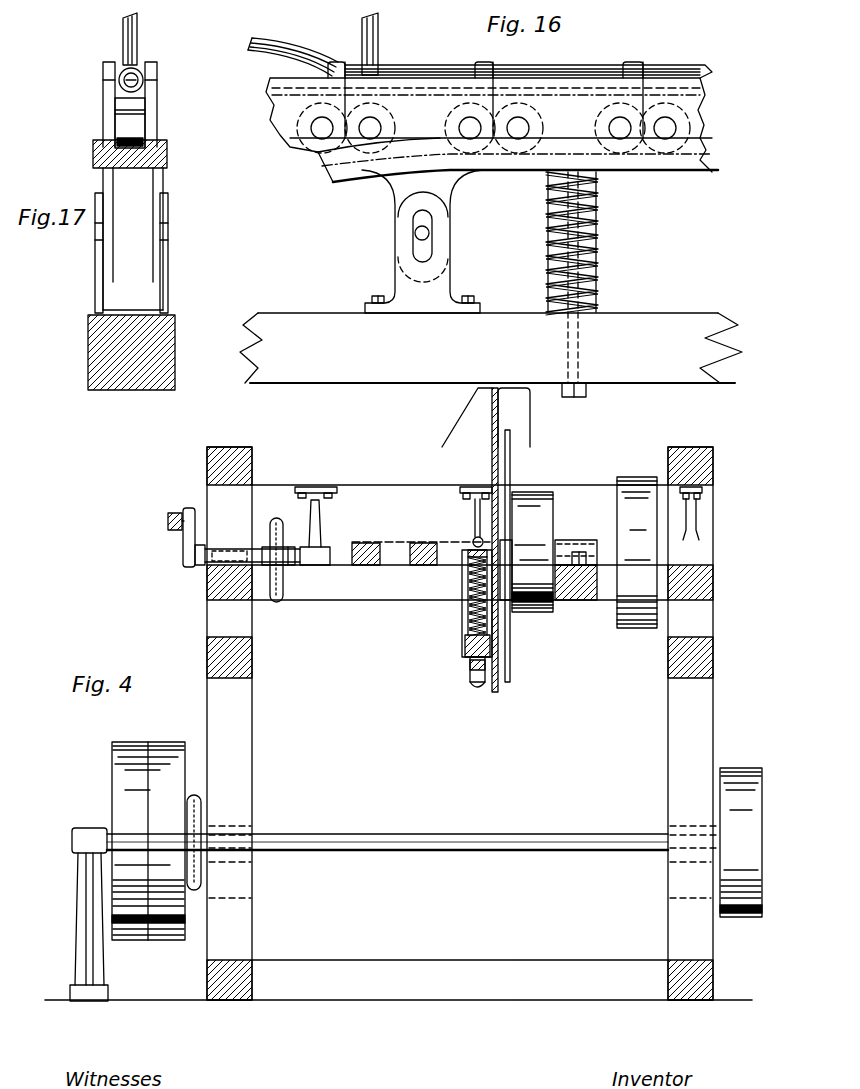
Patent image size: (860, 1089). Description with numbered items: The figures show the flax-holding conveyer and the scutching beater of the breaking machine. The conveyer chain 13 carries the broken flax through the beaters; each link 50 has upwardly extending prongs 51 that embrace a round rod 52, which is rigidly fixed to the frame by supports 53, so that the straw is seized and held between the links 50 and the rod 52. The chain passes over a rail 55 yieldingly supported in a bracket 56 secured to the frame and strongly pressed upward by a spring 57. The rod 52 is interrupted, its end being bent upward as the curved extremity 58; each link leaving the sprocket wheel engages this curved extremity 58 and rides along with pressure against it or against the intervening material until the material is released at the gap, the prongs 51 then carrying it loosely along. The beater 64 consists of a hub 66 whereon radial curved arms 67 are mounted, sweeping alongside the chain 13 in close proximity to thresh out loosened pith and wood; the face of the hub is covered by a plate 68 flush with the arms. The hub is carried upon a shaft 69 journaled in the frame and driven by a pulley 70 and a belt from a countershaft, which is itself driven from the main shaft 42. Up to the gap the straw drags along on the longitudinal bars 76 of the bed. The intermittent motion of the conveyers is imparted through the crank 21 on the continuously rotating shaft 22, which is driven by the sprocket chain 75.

In FIG. 4, the conveyer chain 13 is at (468, 554).
In FIG. 4, the crank 21 is at (185, 551).
In FIG. 4, the continuously rotating shaft 22 is at (292, 564).
In FIG. 4, the main shaft 42 is at (364, 834).
In FIG. 17, the link 50 is at (158, 99).
In FIG. 4, the link 50 is at (470, 676).
In FIG. 16, the prongs 51 is at (492, 70).
In FIG. 4, the prongs 51 is at (472, 688).
In FIG. 17, the round rod 52 is at (143, 77).
In FIG. 16, the round rod 52 is at (690, 70).
In FIG. 4, the round rod 52 is at (473, 539).
In FIG. 17, the supports 53 is at (138, 31).
In FIG. 16, the supports 53 is at (362, 33).
In FIG. 4, the supports 53 is at (474, 510).
In FIG. 17, the rail 55 is at (168, 152).
In FIG. 16, the rail 55 is at (330, 184).
In FIG. 17, the bracket 56 is at (168, 264).
In FIG. 16, the bracket 56 is at (452, 240).
In FIG. 16, the spring 57 is at (600, 237).
In FIG. 4, the spring 57 is at (466, 580).
In FIG. 16, the curved extremity 58 is at (258, 42).
In FIG. 4, the beater 64 is at (516, 590).
In FIG. 4, the hub 66 is at (553, 609).
In FIG. 4, the radial curved arms 67 is at (513, 430).
In FIG. 4, the plate 68 is at (468, 619).
In FIG. 4, the shaft 69 is at (607, 546).
In FIG. 4, the pulley 70 is at (632, 628).
In FIG. 4, the sprocket chain 75 is at (281, 601).
In FIG. 4, the longitudinal bars 76 is at (381, 542).